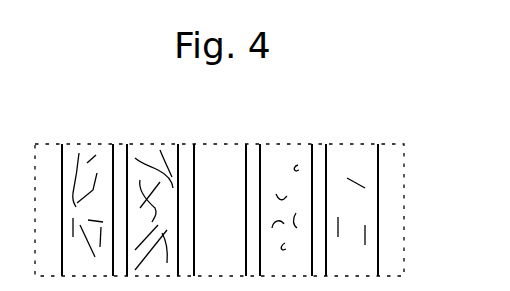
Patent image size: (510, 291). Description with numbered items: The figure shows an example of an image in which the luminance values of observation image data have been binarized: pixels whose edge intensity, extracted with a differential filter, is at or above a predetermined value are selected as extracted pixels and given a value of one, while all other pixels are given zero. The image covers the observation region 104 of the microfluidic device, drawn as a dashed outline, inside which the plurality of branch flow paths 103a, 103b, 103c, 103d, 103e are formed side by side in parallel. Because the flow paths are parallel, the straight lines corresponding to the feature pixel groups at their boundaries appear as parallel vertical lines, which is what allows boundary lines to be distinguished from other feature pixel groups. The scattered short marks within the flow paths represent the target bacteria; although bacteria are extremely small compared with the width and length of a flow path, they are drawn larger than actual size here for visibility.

The observation region 104 is at (406, 221).
The branch flow path 103a is at (352, 143).
The branch flow path 103b is at (287, 143).
The branch flow path 103c is at (221, 143).
The branch flow path 103d is at (156, 143).
The branch flow path 103e is at (90, 143).